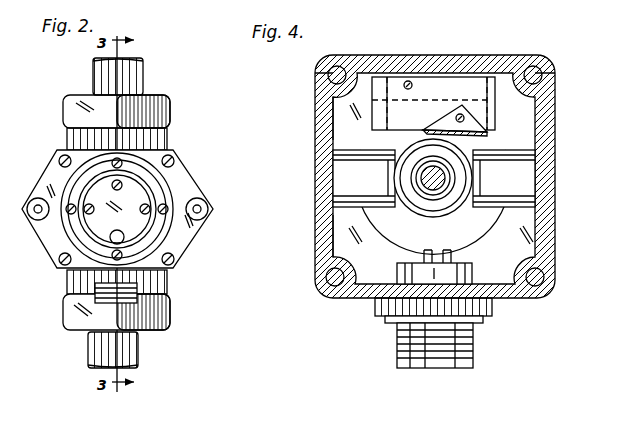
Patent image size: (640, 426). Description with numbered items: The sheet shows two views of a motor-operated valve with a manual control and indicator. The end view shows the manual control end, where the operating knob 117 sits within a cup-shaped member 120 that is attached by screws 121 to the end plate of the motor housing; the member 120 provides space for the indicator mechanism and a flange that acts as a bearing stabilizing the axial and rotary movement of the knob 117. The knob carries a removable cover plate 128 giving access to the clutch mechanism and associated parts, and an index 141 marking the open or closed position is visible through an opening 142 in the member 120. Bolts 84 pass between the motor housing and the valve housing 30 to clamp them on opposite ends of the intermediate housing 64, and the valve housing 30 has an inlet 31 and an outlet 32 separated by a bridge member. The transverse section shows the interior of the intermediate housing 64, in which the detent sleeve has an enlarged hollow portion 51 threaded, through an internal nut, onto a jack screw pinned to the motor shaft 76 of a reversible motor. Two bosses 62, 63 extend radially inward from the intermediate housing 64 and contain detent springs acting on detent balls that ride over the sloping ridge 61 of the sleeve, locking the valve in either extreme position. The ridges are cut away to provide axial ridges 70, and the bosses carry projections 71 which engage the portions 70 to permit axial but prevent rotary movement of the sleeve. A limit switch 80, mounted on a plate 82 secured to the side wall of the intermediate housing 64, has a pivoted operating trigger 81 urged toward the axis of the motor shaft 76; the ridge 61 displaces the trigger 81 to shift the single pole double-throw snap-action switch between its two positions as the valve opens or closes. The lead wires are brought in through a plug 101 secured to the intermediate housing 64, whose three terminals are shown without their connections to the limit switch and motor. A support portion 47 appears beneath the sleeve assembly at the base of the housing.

In FIG. 2, the valve housing 30 is at (170, 140).
In FIG. 2, the inlet 31 is at (143, 78).
In FIG. 2, the outlet 32 is at (140, 350).
In FIG. 2, the bolts 84 is at (60, 162).
In FIG. 4, the bolts 84 is at (326, 75).
In FIG. 2, the operating knob 117 is at (84, 192).
In FIG. 2, the cover plate 128 is at (140, 197).
In FIG. 2, the cup-shaped member 120 is at (162, 199).
In FIG. 2, the screws 121 is at (63, 213).
In FIG. 2, the opening 142 is at (110, 238).
In FIG. 2, the index 141 is at (113, 235).
In FIG. 2, the plug 101 is at (137, 294).
In FIG. 4, the plug 101 is at (478, 328).
In FIG. 4, the plate 82 is at (430, 63).
In FIG. 4, the limit switch 80 is at (455, 83).
In FIG. 4, the intermediate housing 64 is at (318, 124).
In FIG. 4, the boss 63 is at (335, 172).
In FIG. 4, the base support 47 is at (376, 210).
In FIG. 4, the projections 71 is at (399, 208).
In FIG. 4, the axial ridges 70 is at (348, 178).
In FIG. 4, the motor shaft 76 is at (428, 170).
In FIG. 4, the operating trigger 81 is at (472, 128).
In FIG. 4, the boss 62 is at (527, 170).
In FIG. 4, the enlarged hollow portion 51 is at (478, 222).
In FIG. 4, the ridge 61 is at (478, 208).